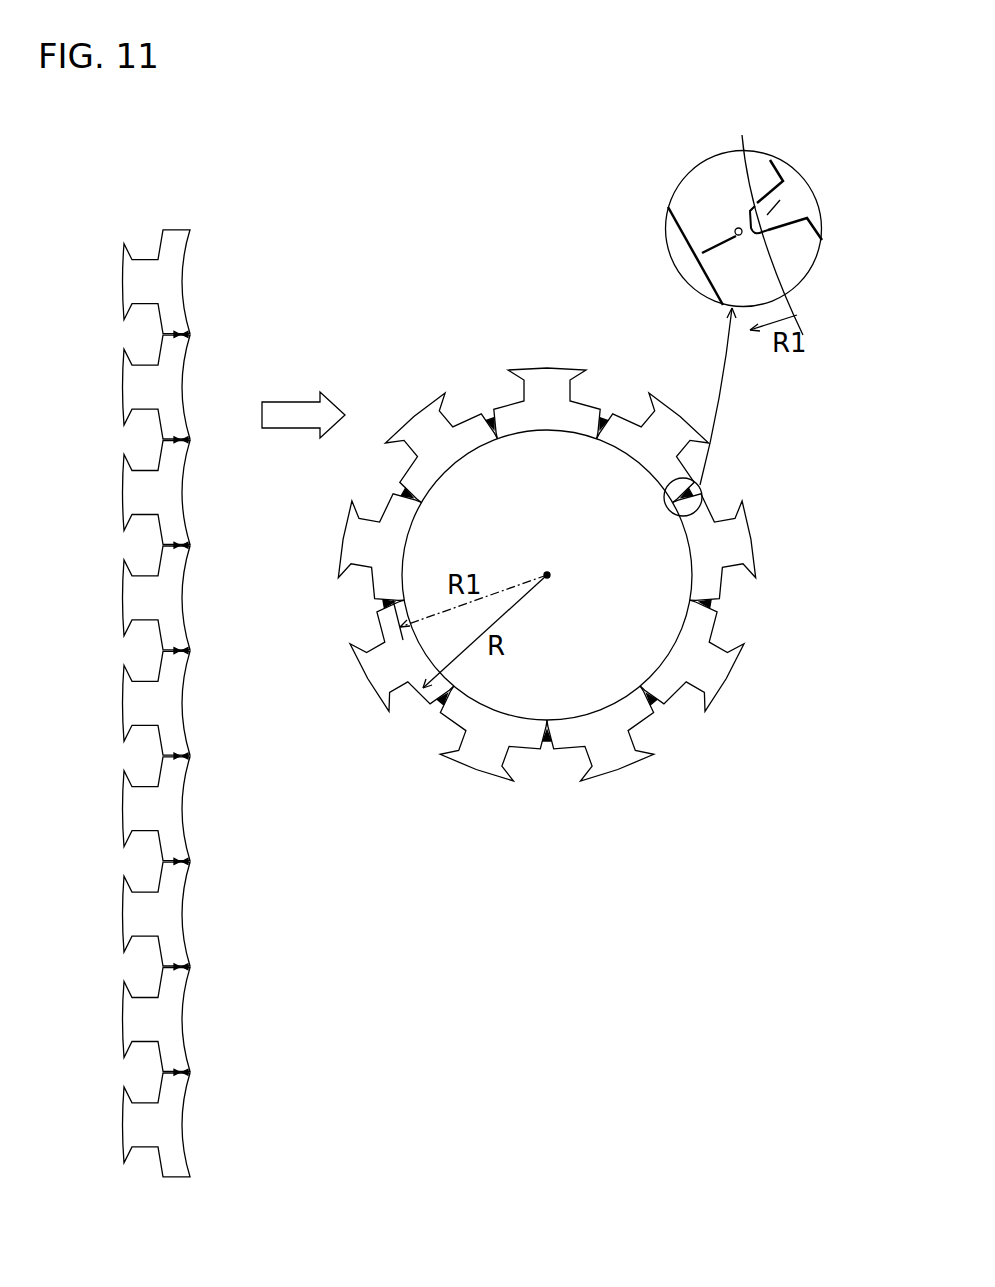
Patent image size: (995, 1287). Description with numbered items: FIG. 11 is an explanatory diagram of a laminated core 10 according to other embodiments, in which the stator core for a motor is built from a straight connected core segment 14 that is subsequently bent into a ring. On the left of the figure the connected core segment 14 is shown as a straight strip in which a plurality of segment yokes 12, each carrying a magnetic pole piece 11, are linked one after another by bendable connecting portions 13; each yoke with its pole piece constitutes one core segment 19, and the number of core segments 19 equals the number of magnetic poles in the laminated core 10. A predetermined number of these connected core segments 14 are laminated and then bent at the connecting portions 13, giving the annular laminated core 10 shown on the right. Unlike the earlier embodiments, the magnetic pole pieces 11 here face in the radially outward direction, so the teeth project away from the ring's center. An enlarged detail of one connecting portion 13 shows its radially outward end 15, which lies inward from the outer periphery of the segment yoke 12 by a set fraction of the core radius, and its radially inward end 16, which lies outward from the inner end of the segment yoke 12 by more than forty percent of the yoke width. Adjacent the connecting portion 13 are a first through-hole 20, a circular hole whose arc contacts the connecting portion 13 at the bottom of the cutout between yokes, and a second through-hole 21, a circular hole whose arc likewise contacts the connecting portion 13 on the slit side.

The laminated core 10 is at (505, 310).
The magnetic pole piece 11 is at (127, 700).
The segment yoke 12 is at (172, 590).
The connecting portion 13 is at (178, 545).
The connected core segment 14 is at (188, 212).
The radially outward end of the connecting portion 15 is at (752, 207).
The radially inward end of the connecting portion 16 is at (736, 236).
The core segment 19 is at (415, 402).
The first through-hole 20 is at (735, 230).
The second through-hole 21 is at (757, 218).